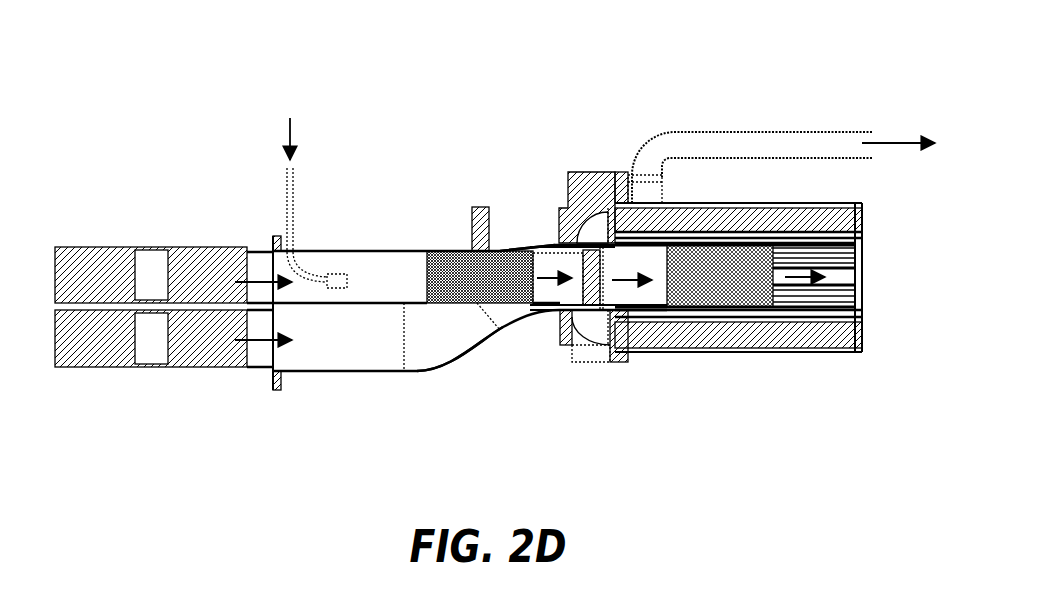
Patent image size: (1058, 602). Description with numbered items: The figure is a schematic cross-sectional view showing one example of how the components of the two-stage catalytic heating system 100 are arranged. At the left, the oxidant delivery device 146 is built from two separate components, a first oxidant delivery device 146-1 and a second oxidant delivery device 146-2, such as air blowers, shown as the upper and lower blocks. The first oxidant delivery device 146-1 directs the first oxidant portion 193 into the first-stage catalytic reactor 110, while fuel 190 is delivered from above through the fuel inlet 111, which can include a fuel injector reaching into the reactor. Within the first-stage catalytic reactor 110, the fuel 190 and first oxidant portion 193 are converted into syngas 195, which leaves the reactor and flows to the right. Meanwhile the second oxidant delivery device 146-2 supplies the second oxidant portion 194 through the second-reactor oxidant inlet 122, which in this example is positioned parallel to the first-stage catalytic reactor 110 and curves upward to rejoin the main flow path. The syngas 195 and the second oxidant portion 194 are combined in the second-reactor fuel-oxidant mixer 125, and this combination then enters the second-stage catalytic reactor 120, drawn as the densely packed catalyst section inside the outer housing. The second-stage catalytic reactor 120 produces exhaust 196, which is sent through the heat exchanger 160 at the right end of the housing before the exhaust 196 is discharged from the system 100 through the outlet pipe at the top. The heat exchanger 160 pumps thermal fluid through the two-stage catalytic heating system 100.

The two-stage catalytic heating system 100 is at (497, 255).
The oxidant delivery device 146 is at (159, 306).
The first oxidant delivery device 146-1 is at (150, 270).
The second oxidant delivery device 146-2 is at (150, 350).
The first oxidant portion 193 is at (267, 277).
The second oxidant portion 194 is at (258, 340).
The fuel 190 is at (309, 200).
The first-reactor fuel inlet 111 is at (344, 275).
The first-stage catalytic reactor 110 is at (445, 305).
The second-reactor oxidant inlet 122 is at (490, 348).
The syngas 195 is at (552, 243).
The second-reactor fuel-oxidant mixer 125 is at (567, 347).
The second-stage catalytic reactor 120 is at (700, 355).
The exhaust 196 is at (778, 400).
The heat exchanger 160 is at (862, 262).